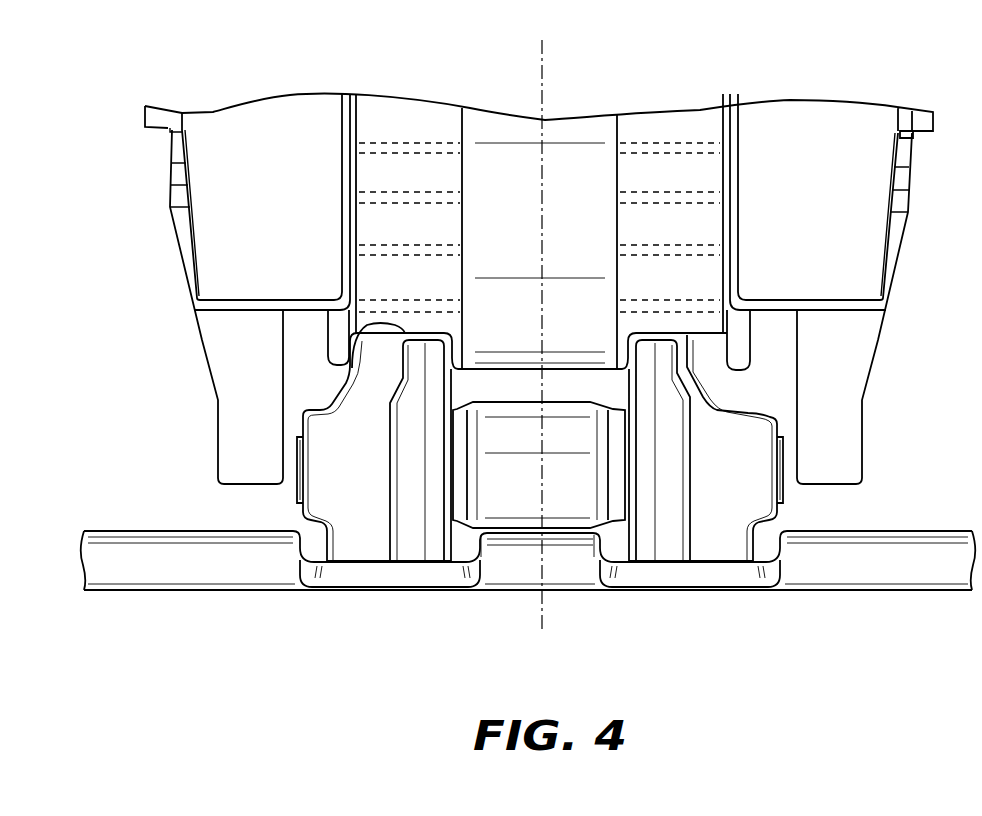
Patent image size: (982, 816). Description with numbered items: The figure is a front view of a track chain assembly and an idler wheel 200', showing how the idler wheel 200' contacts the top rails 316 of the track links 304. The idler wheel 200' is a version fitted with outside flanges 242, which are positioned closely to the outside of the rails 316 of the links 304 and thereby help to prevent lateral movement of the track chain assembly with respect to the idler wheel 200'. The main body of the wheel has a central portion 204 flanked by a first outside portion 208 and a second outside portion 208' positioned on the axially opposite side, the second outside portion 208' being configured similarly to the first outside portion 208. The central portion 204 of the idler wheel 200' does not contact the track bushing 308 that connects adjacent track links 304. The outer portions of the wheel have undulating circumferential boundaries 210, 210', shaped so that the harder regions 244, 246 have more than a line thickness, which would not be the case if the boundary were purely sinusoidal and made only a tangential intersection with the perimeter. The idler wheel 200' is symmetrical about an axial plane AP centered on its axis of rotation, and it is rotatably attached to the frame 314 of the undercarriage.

The idler wheel 200' is at (521, 76).
The central portion 204 is at (547, 378).
The first outside portion 208 is at (408, 177).
The second outside portion 208' is at (684, 189).
The undulating circumferential boundary 210 is at (409, 135).
The battery cell 210' is at (711, 124).
The outside flange 242 is at (337, 346).
The harder region 244 is at (386, 132).
The cell connector 246 is at (433, 103).
The track link 304 is at (362, 528).
The track bushing 308 is at (513, 499).
The frame 314 is at (265, 122).
The rail 316 is at (351, 357).
The axial plane AP is at (543, 56).